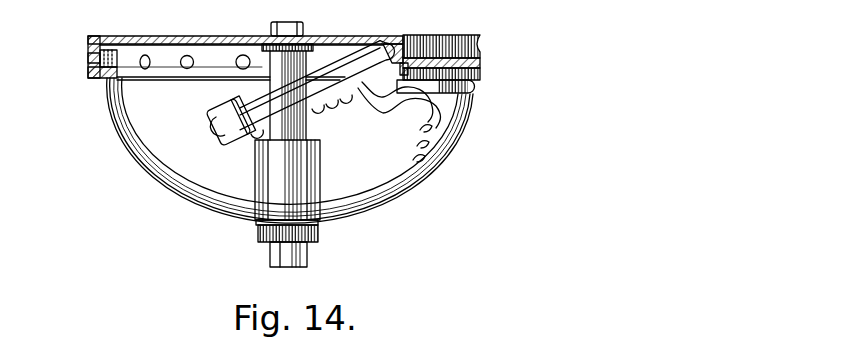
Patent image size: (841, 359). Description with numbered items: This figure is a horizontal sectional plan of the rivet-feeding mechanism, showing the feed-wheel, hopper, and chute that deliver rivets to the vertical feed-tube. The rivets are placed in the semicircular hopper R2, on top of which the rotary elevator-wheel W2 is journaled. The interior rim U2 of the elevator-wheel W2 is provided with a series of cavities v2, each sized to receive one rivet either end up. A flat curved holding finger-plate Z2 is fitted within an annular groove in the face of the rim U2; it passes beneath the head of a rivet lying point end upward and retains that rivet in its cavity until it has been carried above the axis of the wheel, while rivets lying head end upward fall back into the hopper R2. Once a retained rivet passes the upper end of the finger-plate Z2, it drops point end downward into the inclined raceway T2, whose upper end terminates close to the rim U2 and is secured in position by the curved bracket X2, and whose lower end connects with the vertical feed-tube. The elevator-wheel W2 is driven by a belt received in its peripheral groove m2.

The rotary elevator-wheel W2 is at (245, 48).
The interior rim U2 is at (241, 57).
The cavities v2 is at (187, 70).
The peripheral groove m2 is at (96, 48).
The semicircular hopper R2 is at (290, 144).
The inclined raceway T2 is at (298, 94).
The curved holding finger-plate Z2 is at (421, 89).
The curved bracket X2 is at (400, 115).